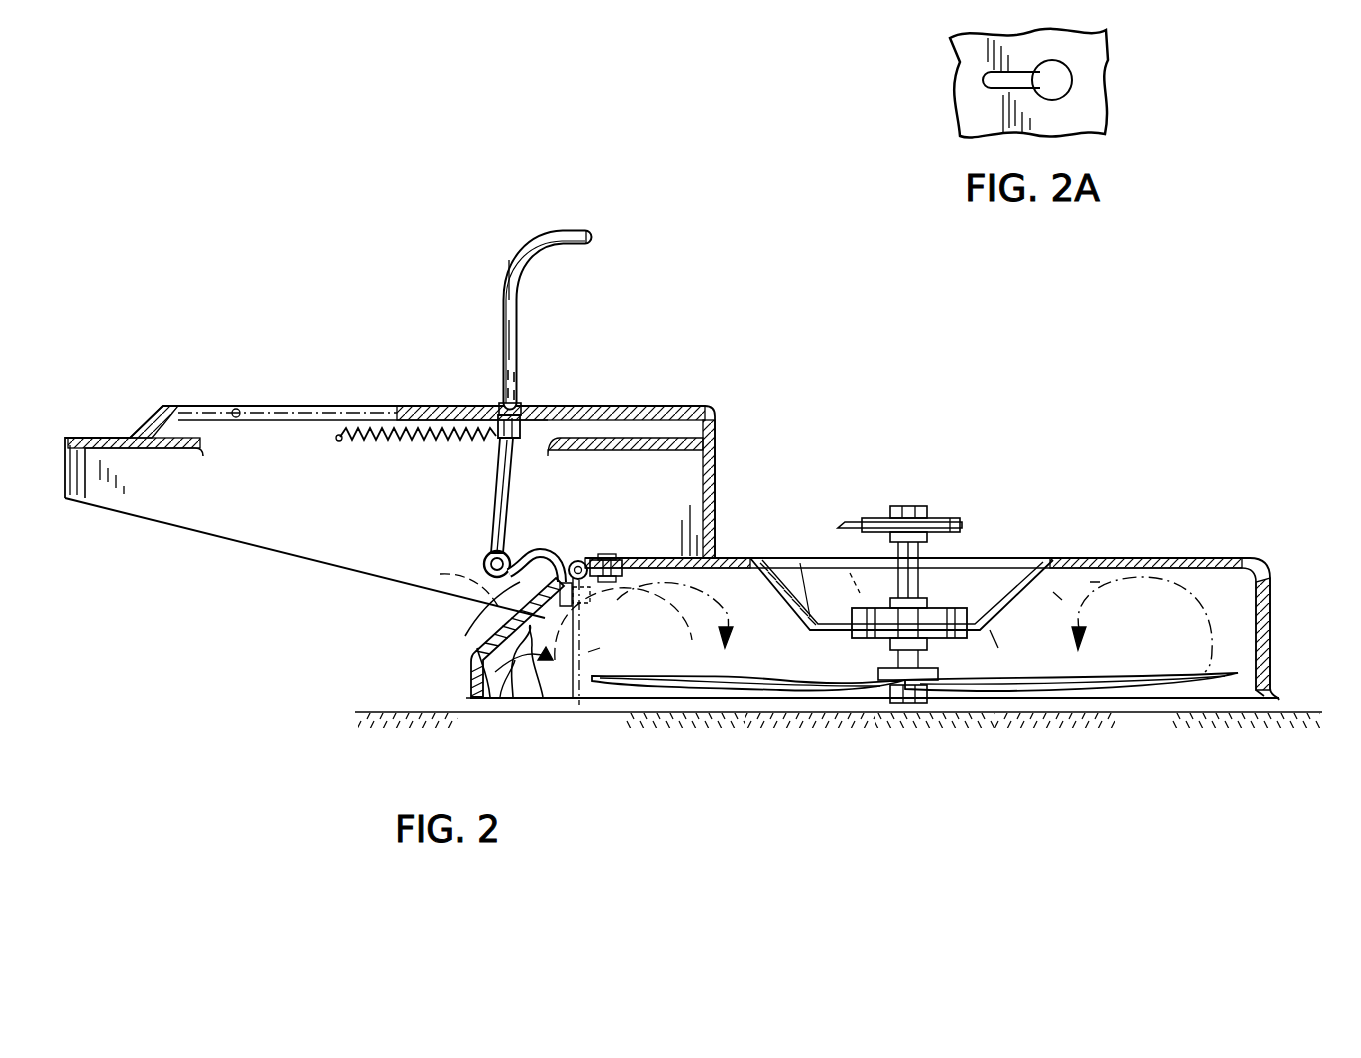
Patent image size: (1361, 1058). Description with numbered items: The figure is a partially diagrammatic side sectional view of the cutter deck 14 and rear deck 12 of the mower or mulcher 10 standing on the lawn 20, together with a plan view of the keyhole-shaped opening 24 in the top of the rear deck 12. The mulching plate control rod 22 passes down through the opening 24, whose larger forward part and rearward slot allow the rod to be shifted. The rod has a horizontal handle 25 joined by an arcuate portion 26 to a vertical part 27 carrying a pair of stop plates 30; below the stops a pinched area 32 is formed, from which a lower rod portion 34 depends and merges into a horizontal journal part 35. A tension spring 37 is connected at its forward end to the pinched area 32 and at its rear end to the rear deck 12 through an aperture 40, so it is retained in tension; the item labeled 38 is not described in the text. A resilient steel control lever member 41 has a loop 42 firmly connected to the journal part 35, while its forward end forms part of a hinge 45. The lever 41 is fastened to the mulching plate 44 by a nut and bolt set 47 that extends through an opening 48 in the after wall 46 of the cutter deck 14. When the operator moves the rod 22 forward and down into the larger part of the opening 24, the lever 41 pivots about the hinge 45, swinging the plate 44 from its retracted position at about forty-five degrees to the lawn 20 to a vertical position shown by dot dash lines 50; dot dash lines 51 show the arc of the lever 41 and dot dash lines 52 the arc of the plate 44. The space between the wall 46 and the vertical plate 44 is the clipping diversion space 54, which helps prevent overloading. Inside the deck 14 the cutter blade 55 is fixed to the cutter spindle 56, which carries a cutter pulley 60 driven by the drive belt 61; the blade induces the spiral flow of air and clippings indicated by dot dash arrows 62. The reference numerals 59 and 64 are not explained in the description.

In FIG. 2, the mulcher 10 is at (1284, 572).
In FIG. 2, the rear deck 12 is at (365, 578).
In FIG. 2, the cutter deck 14 is at (1125, 712).
In FIG. 2, the lawn 20 is at (395, 708).
In FIG. 2, the mulching plate control rod 22 is at (502, 232).
In FIG. 2A, the opening 24 is at (1068, 74).
In FIG. 2, the opening 24 is at (530, 415).
In FIG. 2, the horizontal handle 25 is at (600, 236).
In FIG. 2, the arcuate portion 26 is at (502, 272).
In FIG. 2, the vertical part 27 is at (500, 338).
In FIG. 2, the stop plates 30 is at (514, 375).
In FIG. 2, the pinched area 32 is at (525, 408).
In FIG. 2, the lower rod portion 34 is at (492, 490).
In FIG. 2, the horizontal journal part 35 is at (483, 559).
In FIG. 2, the tension spring 37 is at (408, 438).
In FIG. 2, the spring attachment 38 is at (497, 438).
In FIG. 2, the aperture 40 is at (338, 440).
In FIG. 2, the control lever member 41 is at (560, 556).
In FIG. 2, the loop 42 is at (510, 558).
In FIG. 2, the mulching plate 44 is at (486, 700).
In FIG. 2, the hinge 45 is at (630, 560).
In FIG. 2, the after wall 46 is at (470, 640).
In FIG. 2, the nut and bolt set 47 is at (593, 598).
In FIG. 2, the opening 48 is at (470, 620).
In FIG. 2, the dot dash lines 50 is at (600, 648).
In FIG. 2, the dot dash lines 51 is at (440, 574).
In FIG. 2, the dot dash lines 52 is at (520, 706).
In FIG. 2, the clipping diversion space 54 is at (556, 690).
In FIG. 2, the cutter blade 55 is at (1135, 676).
In FIG. 2, the cutter spindle 56 is at (895, 572).
In FIG. 2, the blade hub 59 is at (930, 605).
In FIG. 2, the cutter pulley 60 is at (945, 518).
In FIG. 2, the drive belt 61 is at (842, 527).
In FIG. 2, the dot dash arrows 62 is at (730, 612).
In FIG. 2, the air flow 64 is at (612, 698).